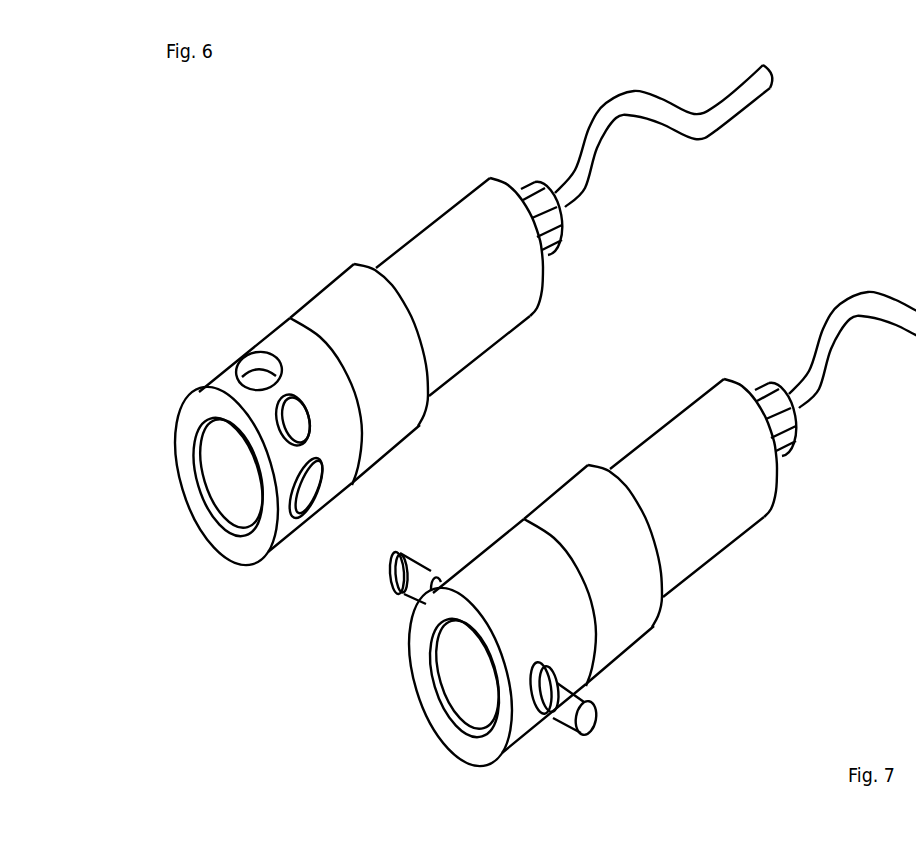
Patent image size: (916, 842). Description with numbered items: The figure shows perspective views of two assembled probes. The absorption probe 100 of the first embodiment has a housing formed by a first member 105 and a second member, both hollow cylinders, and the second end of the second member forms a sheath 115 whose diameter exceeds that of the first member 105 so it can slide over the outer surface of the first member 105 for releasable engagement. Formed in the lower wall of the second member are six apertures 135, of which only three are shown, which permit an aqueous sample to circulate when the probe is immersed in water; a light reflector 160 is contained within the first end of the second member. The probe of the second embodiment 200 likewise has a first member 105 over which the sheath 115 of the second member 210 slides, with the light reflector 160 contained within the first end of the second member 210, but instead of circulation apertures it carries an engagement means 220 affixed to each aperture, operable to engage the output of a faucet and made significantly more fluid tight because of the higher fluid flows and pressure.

In FIG. 6, the absorption probe 100 is at (452, 321).
In FIG. 6, the first member 105 is at (455, 196).
In FIG. 7, the first member 105 is at (693, 482).
In FIG. 6, the sheath 115 is at (340, 267).
In FIG. 7, the sheath 115 is at (588, 561).
In FIG. 6, the apertures 135 is at (257, 355).
In FIG. 6, the light reflector 160 is at (222, 463).
In FIG. 7, the light reflector 160 is at (438, 678).
In FIG. 7, the probe of the second embodiment 200 is at (640, 528).
In FIG. 7, the second member 210 is at (504, 535).
In FIG. 7, the engagement means 220 is at (603, 708).